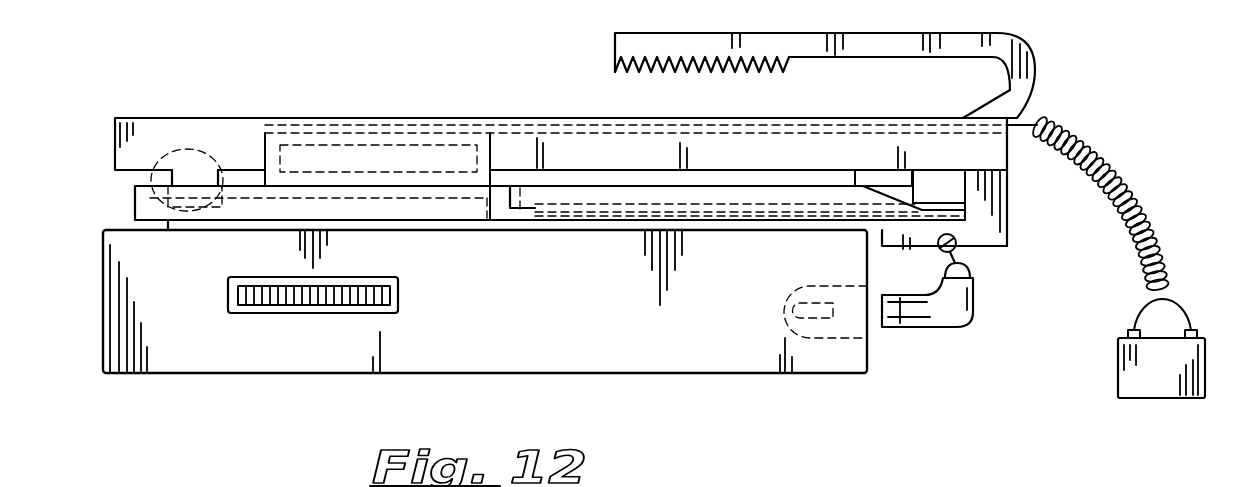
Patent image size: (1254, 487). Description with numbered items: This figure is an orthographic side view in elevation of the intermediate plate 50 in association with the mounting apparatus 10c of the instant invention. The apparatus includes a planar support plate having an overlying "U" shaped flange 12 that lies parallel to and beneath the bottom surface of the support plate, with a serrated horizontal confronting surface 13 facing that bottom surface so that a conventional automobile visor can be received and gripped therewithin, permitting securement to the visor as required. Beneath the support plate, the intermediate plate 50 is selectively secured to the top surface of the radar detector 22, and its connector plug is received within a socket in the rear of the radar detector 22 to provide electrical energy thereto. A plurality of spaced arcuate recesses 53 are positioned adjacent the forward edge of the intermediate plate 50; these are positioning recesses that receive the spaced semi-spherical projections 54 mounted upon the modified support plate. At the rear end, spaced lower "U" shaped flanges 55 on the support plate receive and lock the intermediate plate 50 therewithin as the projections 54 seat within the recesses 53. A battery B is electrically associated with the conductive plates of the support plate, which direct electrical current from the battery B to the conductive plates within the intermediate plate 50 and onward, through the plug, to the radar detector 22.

The clamp 10c is at (619, 139).
The "U" shaped flange 12 is at (911, 59).
The serrated horizontal confronting surface 13 is at (688, 70).
The radar detector 22 is at (489, 373).
The intermediate plate 50 is at (511, 210).
The arcuate recesses 53 is at (134, 206).
The semi-spherical projections 54 is at (200, 178).
The lower "U" shaped flanges 55 is at (990, 240).
The battery B is at (1120, 372).